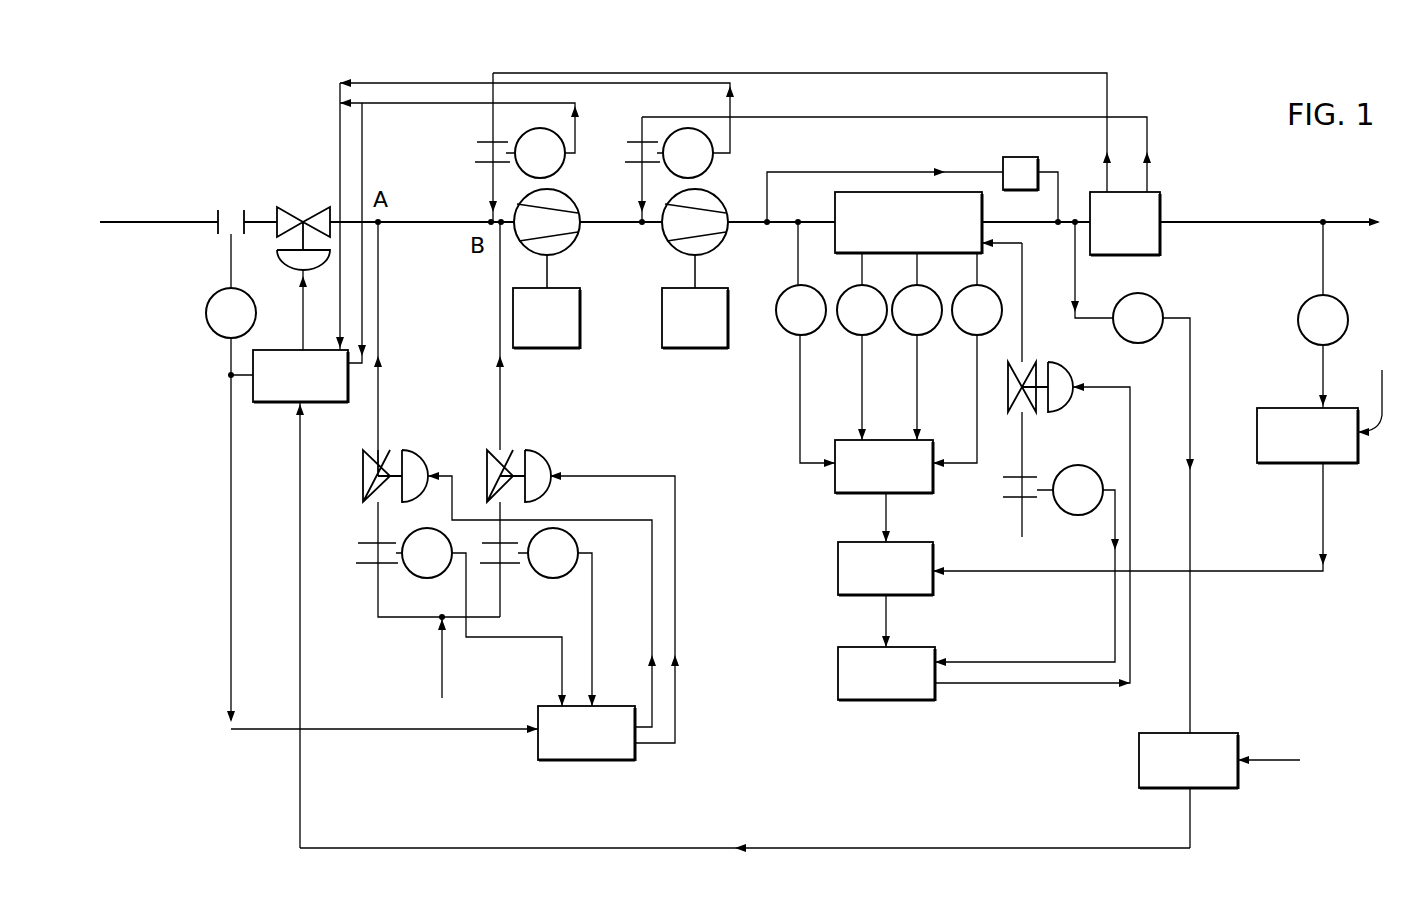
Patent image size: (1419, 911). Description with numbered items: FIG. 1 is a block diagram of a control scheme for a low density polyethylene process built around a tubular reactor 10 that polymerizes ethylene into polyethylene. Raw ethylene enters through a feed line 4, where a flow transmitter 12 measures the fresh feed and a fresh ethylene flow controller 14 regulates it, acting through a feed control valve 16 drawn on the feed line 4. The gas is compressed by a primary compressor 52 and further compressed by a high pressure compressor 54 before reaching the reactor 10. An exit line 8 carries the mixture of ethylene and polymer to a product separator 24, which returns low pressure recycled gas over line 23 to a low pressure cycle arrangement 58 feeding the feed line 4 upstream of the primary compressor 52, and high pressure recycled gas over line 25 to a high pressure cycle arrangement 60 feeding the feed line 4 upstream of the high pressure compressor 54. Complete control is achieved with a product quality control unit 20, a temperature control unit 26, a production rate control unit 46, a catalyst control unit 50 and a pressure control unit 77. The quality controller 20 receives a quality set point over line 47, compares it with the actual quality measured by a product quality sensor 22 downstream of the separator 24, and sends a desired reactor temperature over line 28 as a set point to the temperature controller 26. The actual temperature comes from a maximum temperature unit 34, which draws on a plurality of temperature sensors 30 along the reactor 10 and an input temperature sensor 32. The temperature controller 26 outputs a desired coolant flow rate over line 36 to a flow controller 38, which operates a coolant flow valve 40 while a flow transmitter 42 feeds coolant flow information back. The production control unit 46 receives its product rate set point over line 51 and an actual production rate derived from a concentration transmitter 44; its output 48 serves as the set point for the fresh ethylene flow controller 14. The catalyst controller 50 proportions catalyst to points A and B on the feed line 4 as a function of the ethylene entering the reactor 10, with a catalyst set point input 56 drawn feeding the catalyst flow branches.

The feed line 4 is at (182, 220).
The flow transmitter 12 is at (208, 304).
The feed control valve 16 is at (301, 207).
The fresh ethylene flow controller 14 is at (350, 403).
The low pressure cycle arrangement 58 is at (468, 158).
The high pressure cycle arrangement 60 is at (678, 112).
The primary compressor 52 is at (572, 243).
The high pressure compressor 54 is at (690, 252).
The tubular reactor 10 is at (835, 204).
The input temperature sensor 32 is at (786, 294).
The temperature sensors 30 is at (963, 331).
The maximum temperature unit 34 is at (842, 440).
The temperature control unit 26 is at (920, 542).
The line 36 is at (878, 627).
The flow controller 38 is at (925, 648).
The exit line 8 is at (1047, 226).
The pressure control unit 77 is at (1040, 160).
The line 23 is at (1107, 97).
The line 25 is at (1147, 132).
The product separator 24 is at (1160, 237).
The concentration transmitter 44 is at (1152, 306).
The product quality sensor 22 is at (1302, 307).
The product quality control unit 20 is at (1300, 465).
The line 47 is at (1385, 437).
The line 28 is at (1280, 573).
The coolant flow valve 40 is at (1073, 400).
The flow transmitter 42 is at (1084, 512).
The catalyst feed set point signal 56 is at (440, 667).
The catalyst control unit 50 is at (635, 760).
The production rate control unit 46 is at (1216, 726).
The line 51 is at (1280, 762).
The output 48 is at (983, 840).